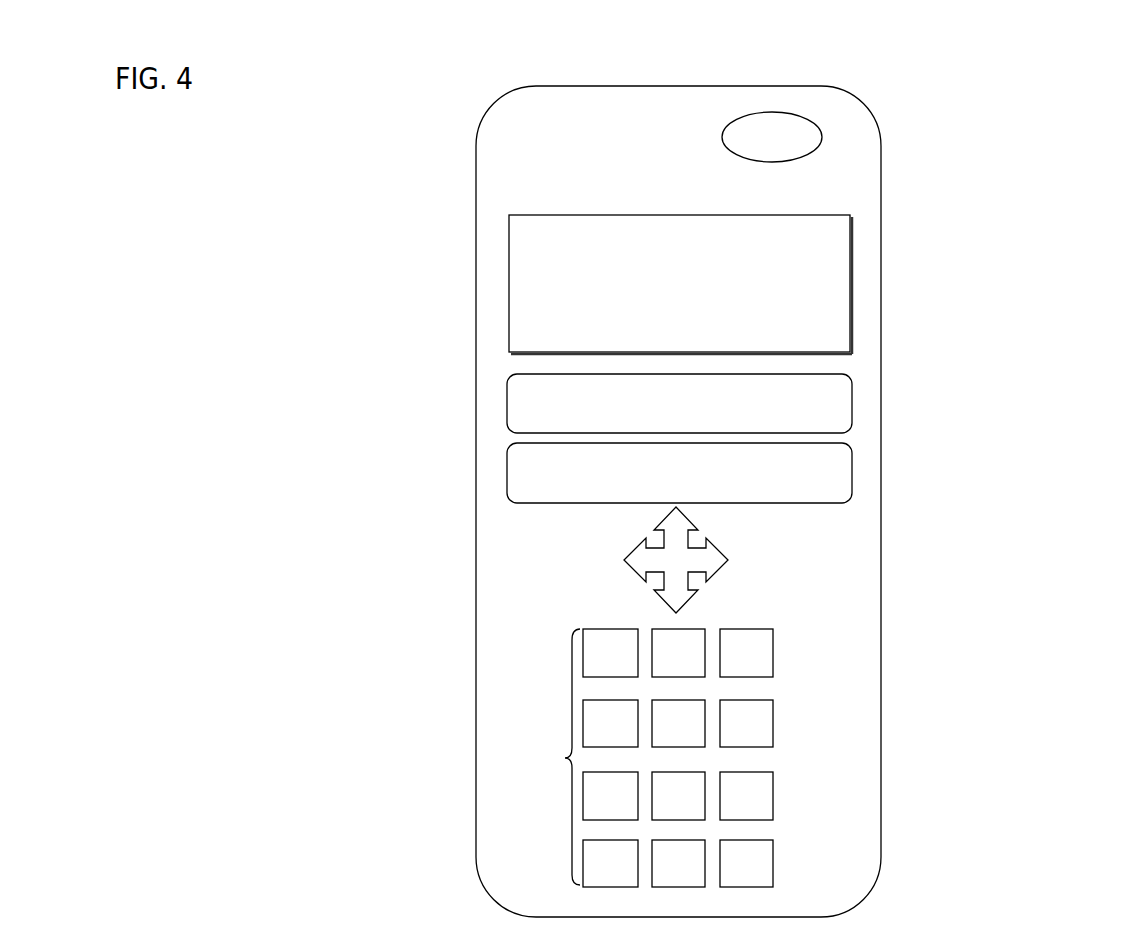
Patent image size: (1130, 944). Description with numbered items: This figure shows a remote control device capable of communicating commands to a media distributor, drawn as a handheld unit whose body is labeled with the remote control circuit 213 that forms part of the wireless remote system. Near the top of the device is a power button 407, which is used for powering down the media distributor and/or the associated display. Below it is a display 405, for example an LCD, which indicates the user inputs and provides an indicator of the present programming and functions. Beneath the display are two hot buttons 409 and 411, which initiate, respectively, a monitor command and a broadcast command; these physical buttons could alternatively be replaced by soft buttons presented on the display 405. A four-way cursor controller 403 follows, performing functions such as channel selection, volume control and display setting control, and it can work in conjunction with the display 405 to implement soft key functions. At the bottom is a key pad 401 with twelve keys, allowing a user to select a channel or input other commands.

The remote control circuit 213 is at (996, 378).
The key pad 401 is at (567, 758).
The cursor controller 403 is at (624, 560).
The display 405 is at (508, 283).
The power button 407 is at (822, 138).
The hot button 409 is at (508, 405).
The hot button 411 is at (508, 473).